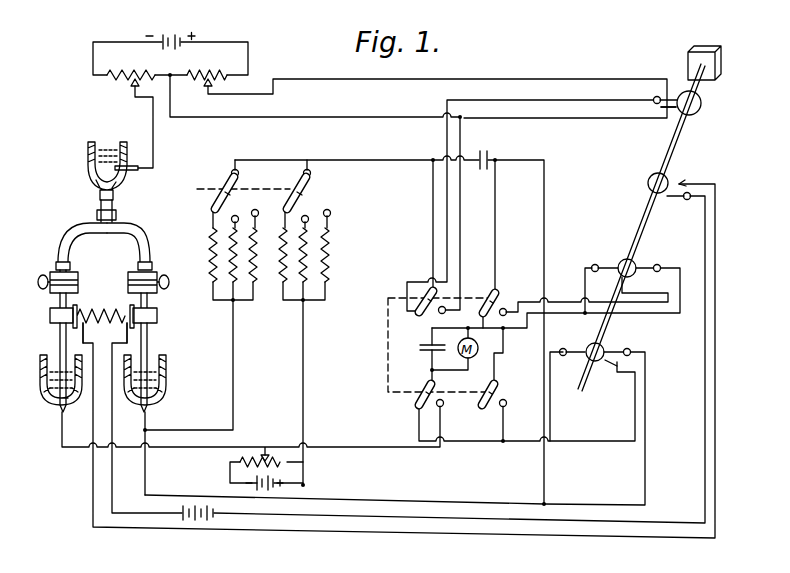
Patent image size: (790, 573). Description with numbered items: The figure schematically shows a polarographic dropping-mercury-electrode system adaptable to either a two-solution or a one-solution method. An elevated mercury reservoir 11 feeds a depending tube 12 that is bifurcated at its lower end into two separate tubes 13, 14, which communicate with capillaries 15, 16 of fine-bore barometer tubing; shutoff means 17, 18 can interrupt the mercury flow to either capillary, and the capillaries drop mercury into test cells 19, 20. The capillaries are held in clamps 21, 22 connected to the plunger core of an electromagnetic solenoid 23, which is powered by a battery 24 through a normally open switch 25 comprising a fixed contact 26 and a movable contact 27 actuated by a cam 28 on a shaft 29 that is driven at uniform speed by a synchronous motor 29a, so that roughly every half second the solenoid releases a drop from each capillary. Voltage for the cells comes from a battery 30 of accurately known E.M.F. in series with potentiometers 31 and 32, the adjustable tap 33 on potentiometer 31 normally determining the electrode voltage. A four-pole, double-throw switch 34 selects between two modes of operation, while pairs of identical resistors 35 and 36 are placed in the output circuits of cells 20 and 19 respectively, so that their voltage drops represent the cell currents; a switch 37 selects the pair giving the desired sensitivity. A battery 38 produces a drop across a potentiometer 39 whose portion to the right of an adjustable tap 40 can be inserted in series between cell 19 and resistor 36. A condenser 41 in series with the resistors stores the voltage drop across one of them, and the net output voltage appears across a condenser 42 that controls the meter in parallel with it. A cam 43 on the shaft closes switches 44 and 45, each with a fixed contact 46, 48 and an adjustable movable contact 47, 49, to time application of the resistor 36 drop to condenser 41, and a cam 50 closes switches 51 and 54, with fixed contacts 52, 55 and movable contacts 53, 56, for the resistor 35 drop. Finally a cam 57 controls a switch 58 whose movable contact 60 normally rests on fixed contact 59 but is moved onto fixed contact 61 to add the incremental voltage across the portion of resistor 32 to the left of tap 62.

The mercury reservoir 11 is at (88, 152).
The depending tube 12 is at (100, 197).
The tube 13 is at (66, 232).
The tube 14 is at (145, 232).
The capillary 15 is at (58, 340).
The capillary 16 is at (150, 345).
The shutoff means 17 is at (40, 279).
The shutoff means 18 is at (166, 279).
The test cell 19 is at (40, 370).
The test cell 20 is at (166, 370).
The clamp 21 is at (50, 320).
The clamp 22 is at (158, 319).
The electromagnetic solenoid 23 is at (108, 310).
The battery 24 is at (203, 524).
The normally open switch 25 is at (668, 213).
The fixed contact 26 is at (682, 182).
The movable contact 27 is at (690, 200).
The cam 28 is at (647, 184).
The shaft 29 is at (667, 151).
The synchronous motor 29a is at (686, 60).
The battery 30 is at (182, 40).
The potentiometer 31 is at (134, 70).
The potentiometer 32 is at (211, 70).
The adjustable tap 33 is at (131, 87).
The four-pole double-throw switch 34 is at (428, 290).
The resistors 35 is at (206, 236).
The resistors 36 is at (303, 213).
The switch 37 is at (286, 199).
The battery 38 is at (278, 492).
The potentiometer 39 is at (272, 456).
The adjustable tap 40 is at (264, 447).
The condenser 41 is at (490, 152).
The condenser 42 is at (431, 347).
The cam 43 is at (636, 263).
The switch 44 is at (618, 255).
The switch 45 is at (669, 260).
The fixed contact 46 is at (606, 252).
The adjustable movable member 47 is at (598, 273).
The fixed contact 48 is at (652, 288).
The adjustable movable contact 49 is at (661, 268).
The cam 50 is at (607, 346).
The switch 51 is at (588, 340).
The fixed contact 52 is at (560, 350).
The movable contact 53 is at (575, 358).
The switch 54 is at (660, 338).
The fixed contact 55 is at (620, 378).
The movable contact 56 is at (634, 352).
The cam 57 is at (702, 104).
The switch 58 is at (680, 82).
The fixed contact 59 is at (661, 108).
The movable contact 60 is at (653, 101).
The fixed contact 61 is at (661, 91).
The tap 62 is at (207, 88).